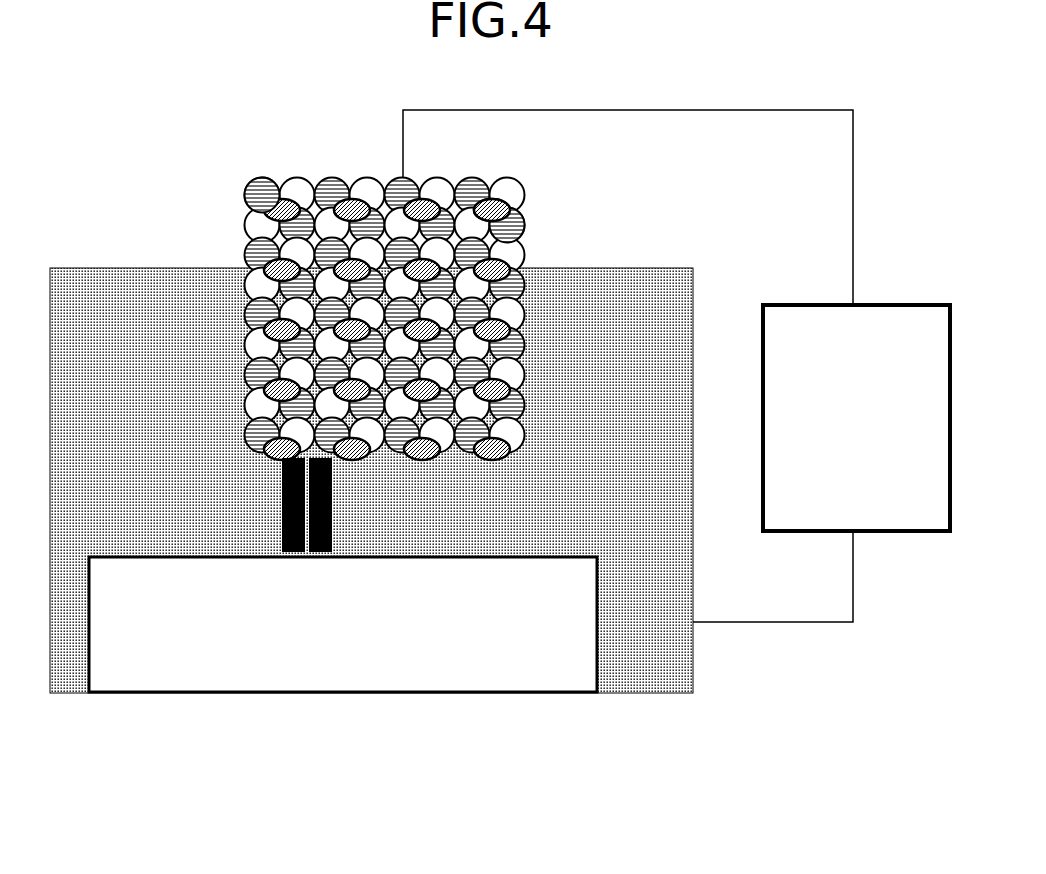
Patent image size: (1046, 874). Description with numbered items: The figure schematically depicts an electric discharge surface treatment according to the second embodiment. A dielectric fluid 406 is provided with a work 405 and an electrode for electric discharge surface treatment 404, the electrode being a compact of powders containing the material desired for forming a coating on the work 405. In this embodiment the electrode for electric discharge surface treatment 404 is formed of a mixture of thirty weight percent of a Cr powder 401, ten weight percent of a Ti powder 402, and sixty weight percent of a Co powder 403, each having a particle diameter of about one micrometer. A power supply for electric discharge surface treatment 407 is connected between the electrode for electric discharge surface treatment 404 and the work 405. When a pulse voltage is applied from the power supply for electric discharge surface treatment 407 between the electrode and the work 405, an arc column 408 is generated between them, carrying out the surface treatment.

The Cr powder 401 is at (377, 295).
The Ti powder 402 is at (527, 228).
The Co powder 403 is at (498, 202).
The electrode for electric discharge surface treatment 404 is at (241, 198).
The work 405 is at (490, 685).
The dielectric fluid 406 is at (685, 560).
The power supply for electric discharge surface treatment 407 is at (818, 303).
The arc column 408 is at (282, 513).